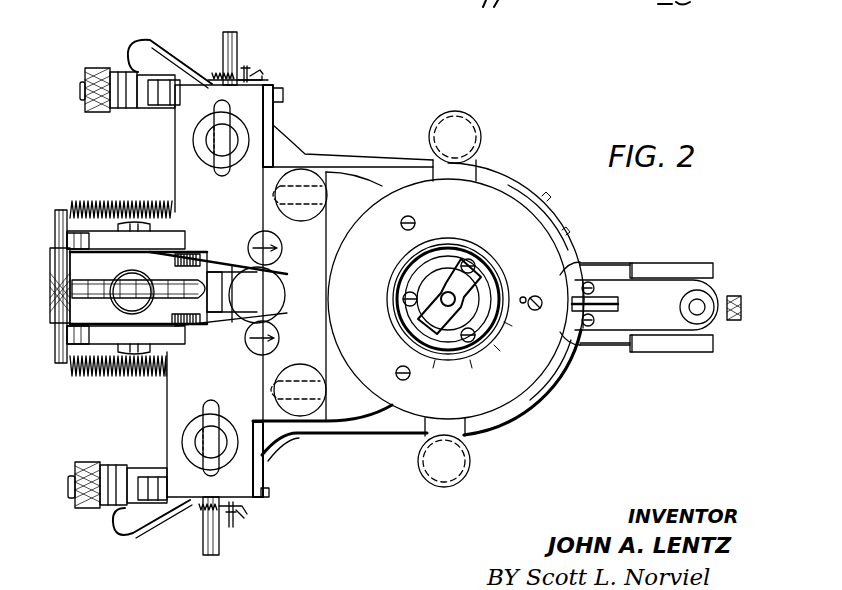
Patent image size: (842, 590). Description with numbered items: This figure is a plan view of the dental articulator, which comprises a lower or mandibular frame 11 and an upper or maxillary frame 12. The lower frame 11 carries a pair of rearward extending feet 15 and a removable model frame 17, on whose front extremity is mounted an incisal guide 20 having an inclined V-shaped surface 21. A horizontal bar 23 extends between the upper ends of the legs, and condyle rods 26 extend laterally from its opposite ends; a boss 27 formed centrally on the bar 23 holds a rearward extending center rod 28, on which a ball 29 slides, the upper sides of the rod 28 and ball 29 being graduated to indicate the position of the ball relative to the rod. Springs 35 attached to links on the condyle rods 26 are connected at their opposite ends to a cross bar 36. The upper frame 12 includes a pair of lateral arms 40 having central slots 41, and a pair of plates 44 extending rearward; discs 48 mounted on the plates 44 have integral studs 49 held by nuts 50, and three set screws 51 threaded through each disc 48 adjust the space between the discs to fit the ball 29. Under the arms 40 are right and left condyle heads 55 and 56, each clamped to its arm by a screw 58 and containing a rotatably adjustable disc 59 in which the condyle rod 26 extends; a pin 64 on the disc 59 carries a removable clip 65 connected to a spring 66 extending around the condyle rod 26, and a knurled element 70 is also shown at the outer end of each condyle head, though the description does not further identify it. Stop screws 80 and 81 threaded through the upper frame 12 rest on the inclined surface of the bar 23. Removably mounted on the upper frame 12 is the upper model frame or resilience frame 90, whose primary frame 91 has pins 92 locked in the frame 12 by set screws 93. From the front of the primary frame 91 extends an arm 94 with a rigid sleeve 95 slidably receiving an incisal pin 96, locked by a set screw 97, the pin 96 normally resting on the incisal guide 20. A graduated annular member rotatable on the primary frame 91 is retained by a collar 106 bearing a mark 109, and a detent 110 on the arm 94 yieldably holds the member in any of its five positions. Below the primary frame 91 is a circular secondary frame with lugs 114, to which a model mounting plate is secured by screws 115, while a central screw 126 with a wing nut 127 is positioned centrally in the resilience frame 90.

The lower frame 11 is at (510, 176).
The upper frame 12 is at (320, 164).
The feet 15 is at (130, 46).
The model frame 17 is at (520, 408).
The incisal guide 20 is at (688, 263).
The inclined V-shaped surface 21 is at (645, 264).
The horizontal bar 23 is at (227, 267).
The condyle rods 26 is at (232, 35).
The boss 27 is at (282, 280).
The center rod 28 is at (168, 284).
The ball 29 is at (112, 280).
The springs 35 is at (92, 370).
The cross bar 36 is at (52, 303).
The lateral arms 40 is at (180, 128).
The central slots 41 is at (226, 112).
The plates 44 is at (67, 242).
The discs 48 is at (200, 250).
The studs 49 is at (172, 216).
The nuts 50 is at (150, 228).
The set screws 51 is at (92, 250).
The right condyle head 55 is at (146, 480).
The left condyle head 56 is at (162, 85).
The screw 58 is at (200, 145).
The disc 59 is at (283, 92).
The pin 64 is at (247, 66).
The clip 65 is at (260, 74).
The spring 66 is at (220, 72).
The knob 70 is at (125, 110).
The stop screw 80 is at (267, 231).
The stop screw 81 is at (272, 327).
The upper model frame 90 is at (528, 200).
The primary frame 91 is at (358, 422).
The pins 92 is at (278, 194).
The set screws 93 is at (298, 209).
The arm 94 is at (675, 322).
The sleeve 95 is at (680, 307).
The incisal pin 96 is at (702, 302).
The set screw 97 is at (742, 298).
The collar 106 is at (395, 293).
The mark 109 is at (516, 296).
The detent 110 is at (610, 300).
The lugs 114 is at (433, 167).
The screws 115 is at (478, 125).
The screw 126 is at (450, 290).
The wing nut 127 is at (418, 310).